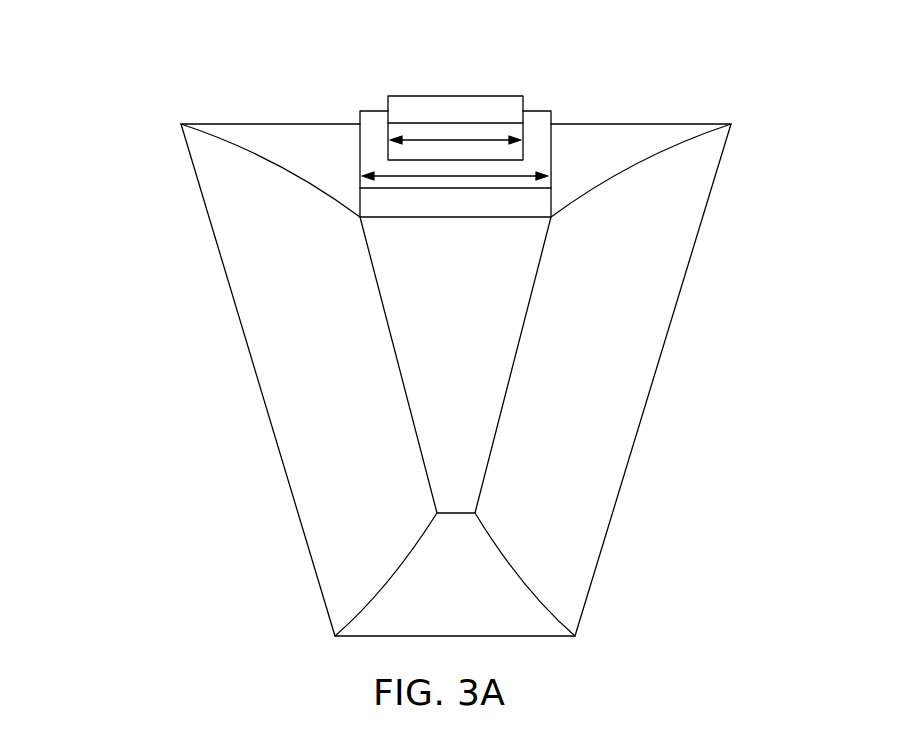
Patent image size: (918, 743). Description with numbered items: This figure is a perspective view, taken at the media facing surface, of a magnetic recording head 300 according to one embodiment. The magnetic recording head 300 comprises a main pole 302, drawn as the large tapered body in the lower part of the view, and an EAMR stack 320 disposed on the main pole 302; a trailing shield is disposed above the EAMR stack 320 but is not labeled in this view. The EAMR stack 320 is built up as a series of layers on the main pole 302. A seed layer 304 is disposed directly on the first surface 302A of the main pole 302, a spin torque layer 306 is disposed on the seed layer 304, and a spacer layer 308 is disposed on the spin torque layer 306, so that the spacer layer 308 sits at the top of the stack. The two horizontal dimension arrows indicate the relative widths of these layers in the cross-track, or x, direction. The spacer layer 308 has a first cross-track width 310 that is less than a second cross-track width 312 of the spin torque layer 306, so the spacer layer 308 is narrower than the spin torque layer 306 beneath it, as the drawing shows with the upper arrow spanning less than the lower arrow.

The magnetic recording head 300 is at (133, 93).
The main pole 302 is at (474, 343).
The first surface of the main pole 302A is at (476, 218).
The seed layer 304 is at (528, 198).
The spin torque layer 306 is at (375, 142).
The spacer layer 308 is at (418, 110).
The first cross-track width 310 is at (478, 140).
The second cross-track width 312 is at (405, 177).
The EAMR stack 320 is at (493, 48).